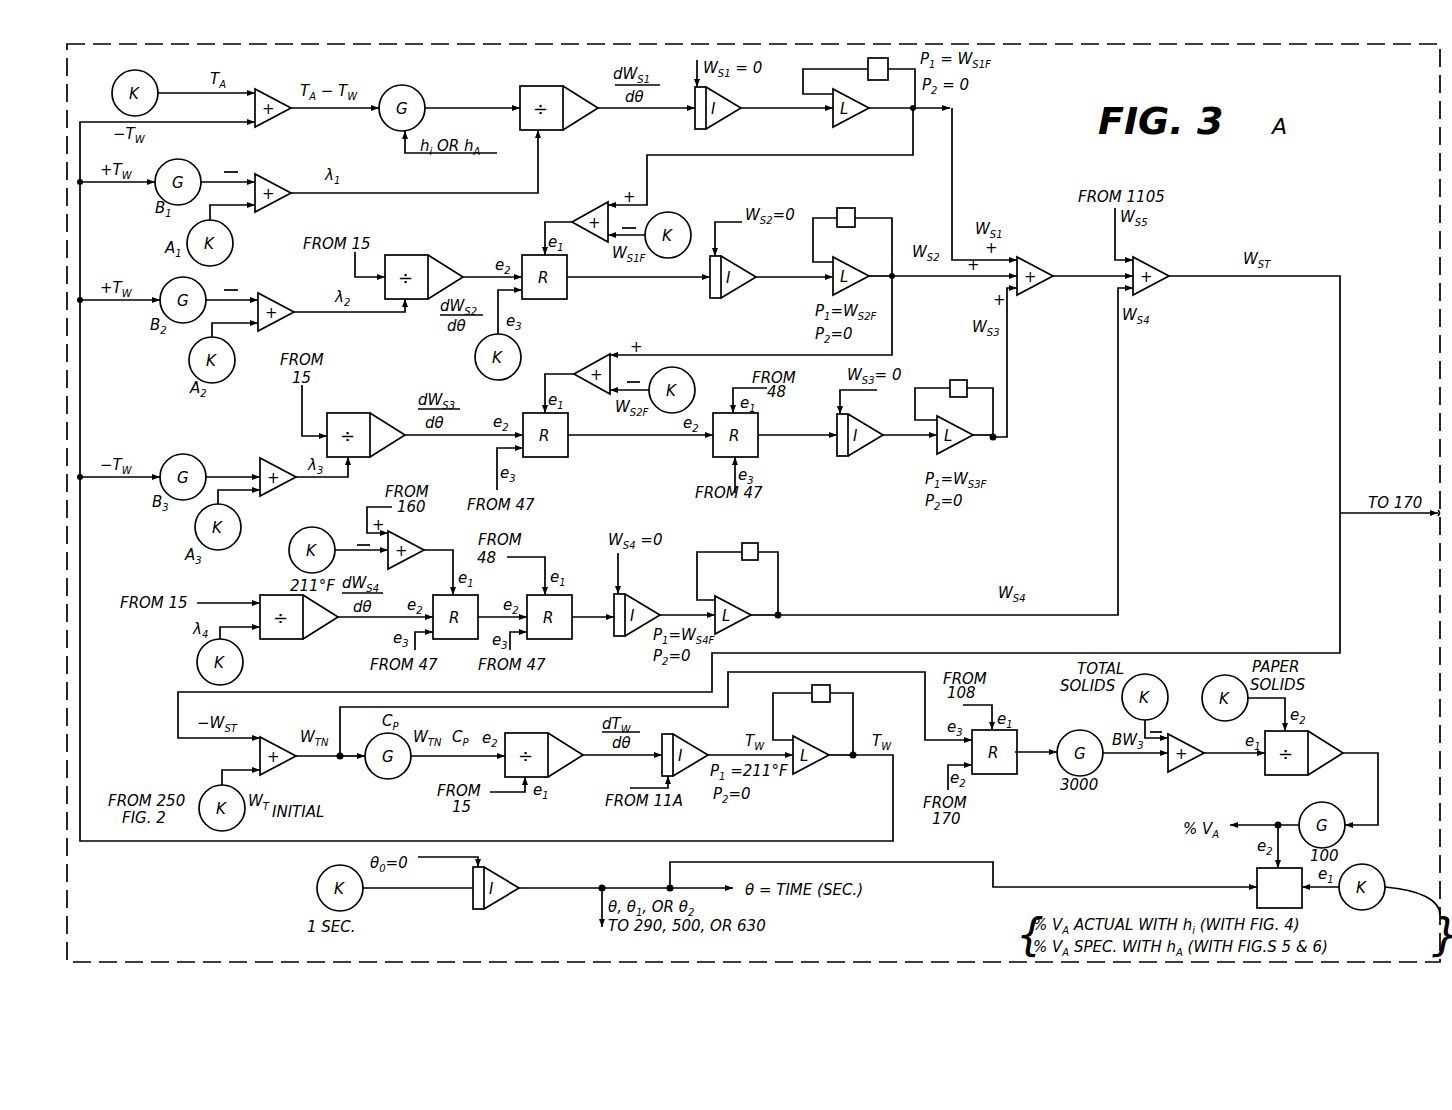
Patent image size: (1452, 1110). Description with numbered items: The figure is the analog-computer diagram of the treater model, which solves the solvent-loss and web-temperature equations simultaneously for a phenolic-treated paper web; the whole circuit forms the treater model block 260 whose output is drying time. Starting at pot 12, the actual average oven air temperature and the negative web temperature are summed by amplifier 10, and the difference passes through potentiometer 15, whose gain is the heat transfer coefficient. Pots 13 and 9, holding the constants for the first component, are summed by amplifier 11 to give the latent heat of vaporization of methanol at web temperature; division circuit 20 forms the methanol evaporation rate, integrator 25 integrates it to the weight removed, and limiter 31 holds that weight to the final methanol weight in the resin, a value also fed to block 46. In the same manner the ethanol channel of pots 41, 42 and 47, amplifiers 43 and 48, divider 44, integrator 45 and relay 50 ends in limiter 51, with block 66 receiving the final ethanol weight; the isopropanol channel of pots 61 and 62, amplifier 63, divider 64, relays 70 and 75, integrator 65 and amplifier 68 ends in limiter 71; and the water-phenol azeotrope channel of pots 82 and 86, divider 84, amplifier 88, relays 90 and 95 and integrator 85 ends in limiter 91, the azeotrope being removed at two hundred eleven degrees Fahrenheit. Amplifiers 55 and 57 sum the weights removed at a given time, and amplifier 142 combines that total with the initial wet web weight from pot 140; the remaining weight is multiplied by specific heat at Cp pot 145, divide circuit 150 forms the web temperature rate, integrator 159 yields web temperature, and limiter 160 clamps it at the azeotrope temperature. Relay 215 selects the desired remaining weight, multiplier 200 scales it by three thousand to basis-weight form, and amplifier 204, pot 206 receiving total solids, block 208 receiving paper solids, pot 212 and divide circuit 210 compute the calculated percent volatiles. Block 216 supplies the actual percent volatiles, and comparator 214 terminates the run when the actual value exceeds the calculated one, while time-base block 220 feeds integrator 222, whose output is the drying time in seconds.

The pot 9 is at (233, 240).
The amplifier 10 is at (263, 92).
The amplifier 11 is at (265, 177).
The pot 12 is at (150, 74).
The pot 13 is at (195, 164).
The potentiometer 15 is at (410, 87).
The division circuit 20 is at (537, 84).
The integrator 25 is at (720, 118).
The limiter 31 is at (853, 120).
The gain multiplier B2 41 is at (173, 280).
The constant multiplier A2 42 is at (188, 360).
The summing amplifier 43 is at (273, 292).
The divider 44 is at (408, 257).
The integrator 45 is at (733, 290).
The block 46 is at (663, 213).
The constant multiplier 47 is at (475, 355).
The summing amplifier 48 is at (590, 210).
The relay 50 is at (568, 290).
The ethanol limiter 51 is at (845, 262).
The amplifier 55 is at (1027, 290).
The amplifier 57 is at (1150, 262).
The gain multiplier B3 61 is at (170, 455).
The constant multiplier A3 62 is at (195, 525).
The summing amplifier 63 is at (260, 458).
The divider 64 is at (337, 413).
The integrator 65 is at (858, 452).
The block 66 is at (697, 373).
The summing amplifier 68 is at (588, 367).
The relay 70 is at (530, 413).
The isopropanol limiter 71 is at (948, 427).
The relay 75 is at (713, 447).
The constant multiplier A4 82 is at (197, 652).
The divider 84 is at (280, 640).
The integrator 85 is at (633, 597).
The constant multiplier 86 is at (293, 535).
The summing amplifier 88 is at (413, 540).
The relay 90 is at (478, 597).
The water-phenol azeotrope limiter 91 is at (727, 597).
The relay 95 is at (568, 640).
The pot 140 is at (207, 793).
The amplifier 142 is at (277, 737).
The Cp pot 145 is at (367, 770).
The divide circuit 150 is at (532, 732).
The integrator 159 is at (682, 733).
The limiter 160 is at (810, 738).
The multiplier 200 is at (1070, 730).
The amplifier 204 is at (1192, 763).
The pot 206 is at (1132, 714).
The block 208 is at (1208, 680).
The divide circuit 210 is at (1322, 732).
The pot 212 is at (1328, 800).
The comparator block 214 is at (1257, 868).
The relay 215 is at (1013, 730).
The block 216 is at (1382, 863).
The time base block 220 is at (318, 878).
The integrator 222 is at (505, 868).
The Treater Model block 260 is at (1125, 44).